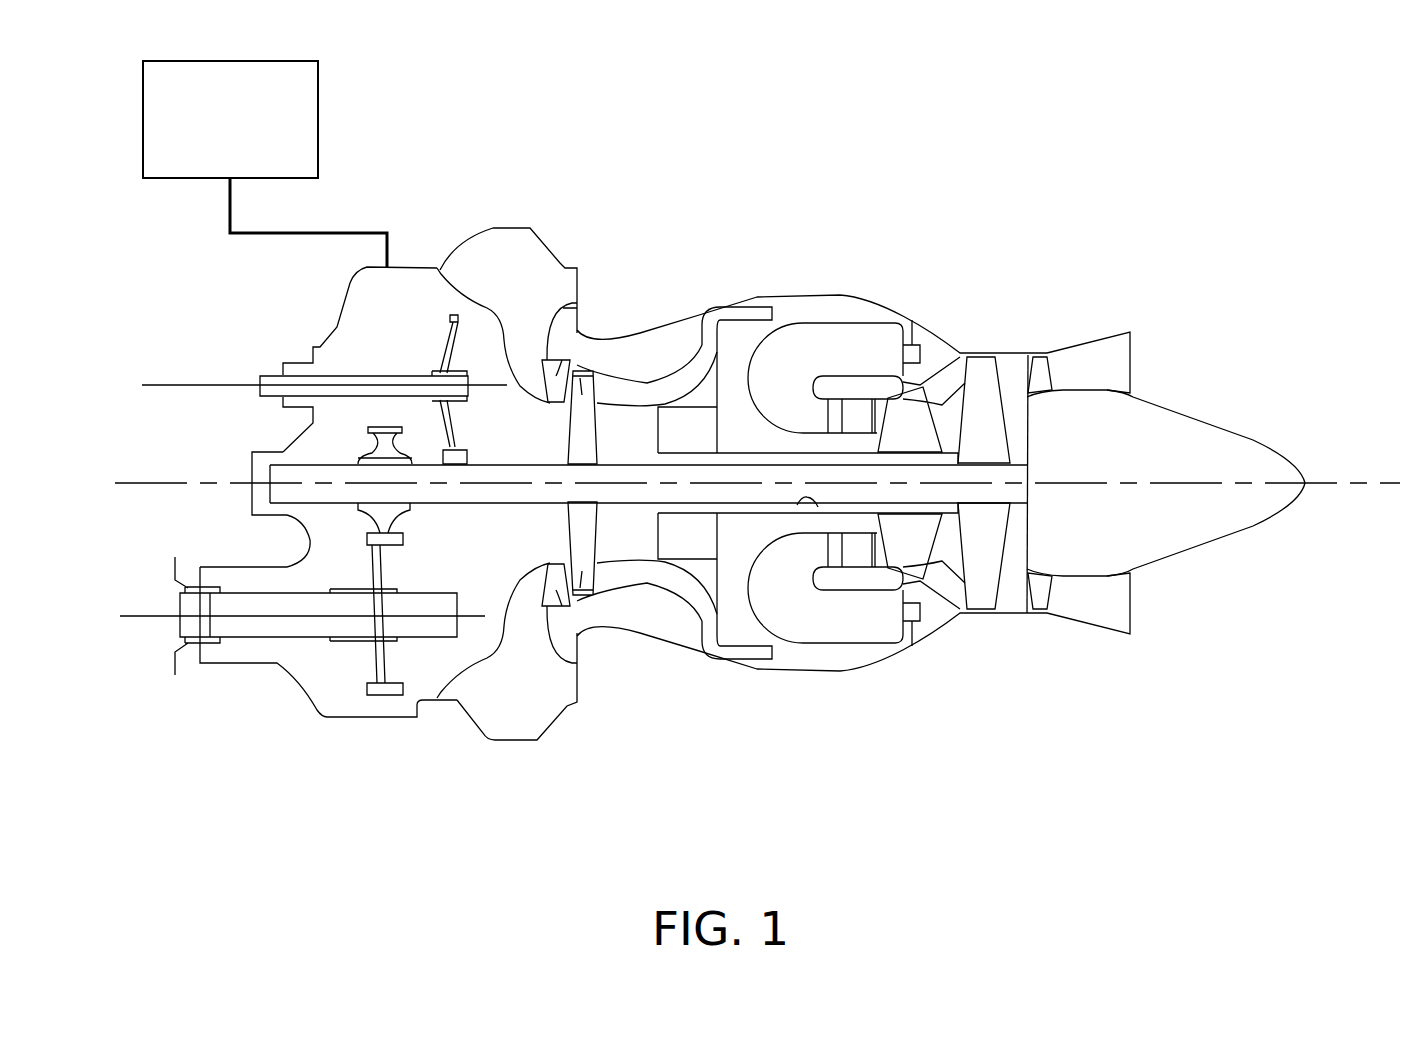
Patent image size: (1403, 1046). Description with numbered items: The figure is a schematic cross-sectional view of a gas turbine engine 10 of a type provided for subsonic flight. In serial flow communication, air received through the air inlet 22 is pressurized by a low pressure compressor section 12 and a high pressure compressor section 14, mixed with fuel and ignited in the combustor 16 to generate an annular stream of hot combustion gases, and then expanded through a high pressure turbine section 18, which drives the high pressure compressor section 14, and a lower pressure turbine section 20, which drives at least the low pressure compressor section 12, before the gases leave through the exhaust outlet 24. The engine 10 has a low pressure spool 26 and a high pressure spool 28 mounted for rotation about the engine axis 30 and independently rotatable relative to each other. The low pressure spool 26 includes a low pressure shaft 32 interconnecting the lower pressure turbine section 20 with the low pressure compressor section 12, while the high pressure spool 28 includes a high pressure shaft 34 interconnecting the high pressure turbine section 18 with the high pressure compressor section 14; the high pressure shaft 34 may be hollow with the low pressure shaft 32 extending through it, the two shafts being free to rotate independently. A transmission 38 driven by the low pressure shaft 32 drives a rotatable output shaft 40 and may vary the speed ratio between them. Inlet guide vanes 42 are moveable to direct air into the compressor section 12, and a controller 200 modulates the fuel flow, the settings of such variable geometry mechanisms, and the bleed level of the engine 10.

The gas turbine engine 10 is at (1105, 240).
The low pressure compressor section 12 is at (575, 318).
The high pressure compressor section 14 is at (690, 420).
The combustor 16 is at (848, 360).
The high pressure turbine section 18 is at (900, 543).
The lower pressure turbine section 20 is at (983, 380).
The air inlet 22 is at (467, 705).
The exhaust outlet 24 is at (1113, 613).
The low pressure spool 26 is at (617, 503).
The high pressure spool 28 is at (740, 513).
The engine axis 30 is at (1370, 483).
The low pressure shaft 32 is at (512, 500).
The high pressure shaft 34 is at (818, 507).
The transmission 38 is at (336, 533).
The output shaft 40 is at (245, 623).
The inlet guide vanes 42 is at (560, 370).
The controller 200 is at (258, 158).